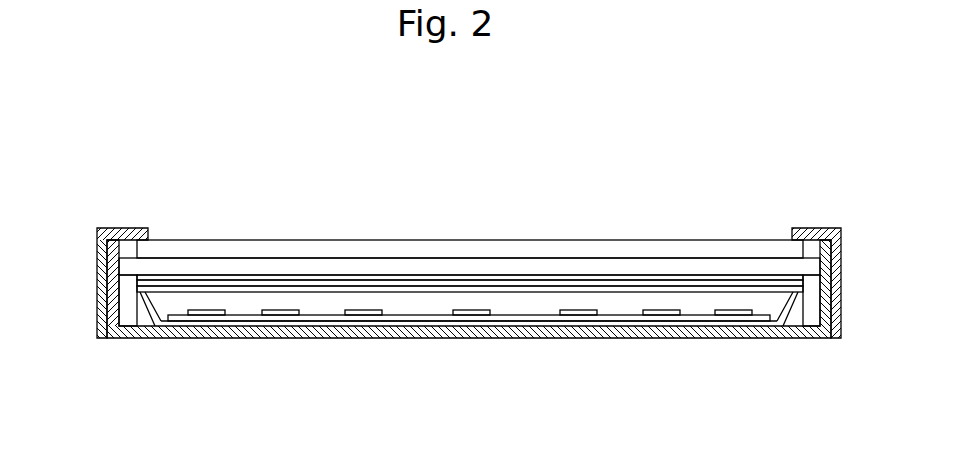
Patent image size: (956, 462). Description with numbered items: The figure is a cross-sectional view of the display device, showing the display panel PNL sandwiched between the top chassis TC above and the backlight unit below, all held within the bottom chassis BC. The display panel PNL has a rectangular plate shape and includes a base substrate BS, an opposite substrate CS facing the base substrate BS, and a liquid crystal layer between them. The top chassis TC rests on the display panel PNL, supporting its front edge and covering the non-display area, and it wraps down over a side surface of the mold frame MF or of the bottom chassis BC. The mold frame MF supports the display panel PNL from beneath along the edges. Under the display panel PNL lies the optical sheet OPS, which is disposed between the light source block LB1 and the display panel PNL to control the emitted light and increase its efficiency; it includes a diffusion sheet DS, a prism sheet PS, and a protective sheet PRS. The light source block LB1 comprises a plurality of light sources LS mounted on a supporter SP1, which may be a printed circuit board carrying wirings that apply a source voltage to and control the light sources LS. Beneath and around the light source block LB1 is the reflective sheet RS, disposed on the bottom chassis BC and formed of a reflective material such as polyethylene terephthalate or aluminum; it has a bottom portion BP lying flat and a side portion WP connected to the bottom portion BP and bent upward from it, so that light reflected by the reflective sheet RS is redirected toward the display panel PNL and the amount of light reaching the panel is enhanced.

The top chassis TC is at (128, 228).
The bottom chassis BC is at (118, 338).
The mold frame MF is at (128, 299).
The display panel PNL is at (469, 213).
The base substrate BS is at (487, 185).
The opposite substrate CS is at (462, 247).
The optical sheet OPS is at (470, 222).
The protective sheet PRS is at (528, 280).
The prism sheet PS is at (565, 285).
The diffusion sheet DS is at (532, 185).
The reflective sheet RS is at (469, 364).
The side portion WP is at (145, 324).
The bottom portion BP is at (212, 326).
The light source block LB1 is at (469, 373).
The supporter SP1 is at (305, 321).
The light source LS is at (362, 315).